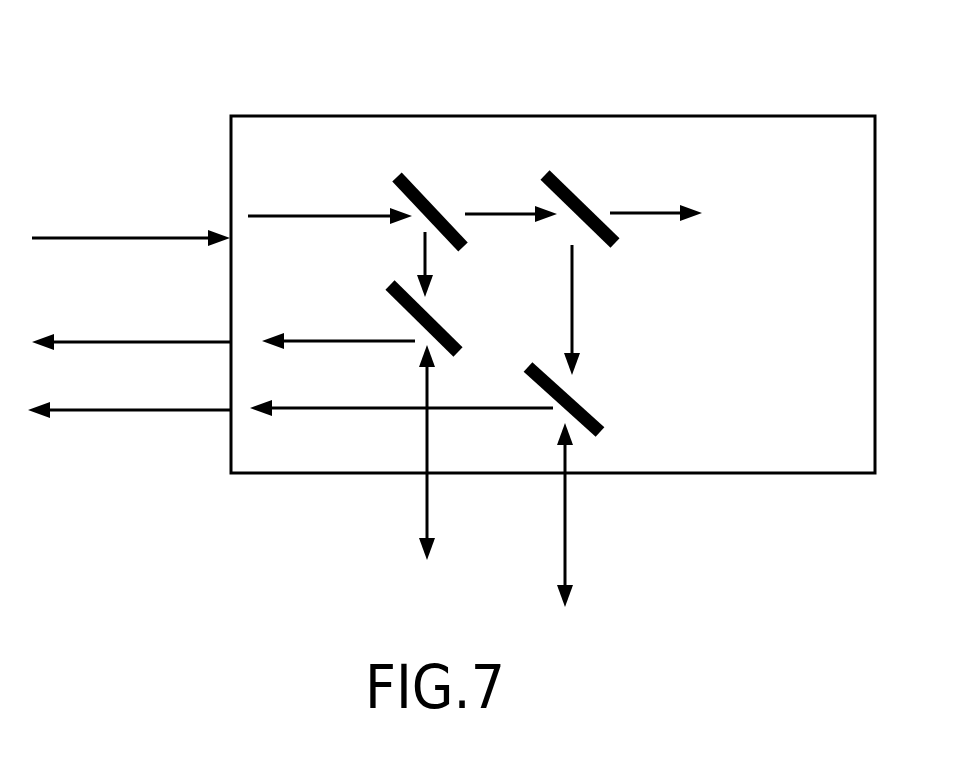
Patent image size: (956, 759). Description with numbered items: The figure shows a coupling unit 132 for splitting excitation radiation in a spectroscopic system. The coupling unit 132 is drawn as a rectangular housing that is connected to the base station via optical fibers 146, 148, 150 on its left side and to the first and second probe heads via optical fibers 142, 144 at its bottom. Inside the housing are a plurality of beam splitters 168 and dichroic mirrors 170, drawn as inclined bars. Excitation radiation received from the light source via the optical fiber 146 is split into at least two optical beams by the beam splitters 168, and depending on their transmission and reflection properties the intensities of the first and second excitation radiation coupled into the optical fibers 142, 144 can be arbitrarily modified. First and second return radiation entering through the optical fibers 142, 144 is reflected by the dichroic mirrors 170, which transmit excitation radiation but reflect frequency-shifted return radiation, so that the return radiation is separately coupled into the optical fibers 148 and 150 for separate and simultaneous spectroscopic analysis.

The coupling unit 132 is at (703, 115).
The optical fiber 142 is at (428, 517).
The optical fiber 144 is at (565, 520).
The optical fiber 146 is at (116, 238).
The optical fiber 148 is at (128, 342).
The optical fiber 150 is at (135, 414).
The beam splitters 168 is at (542, 177).
The dichroic mirrors 170 is at (438, 323).